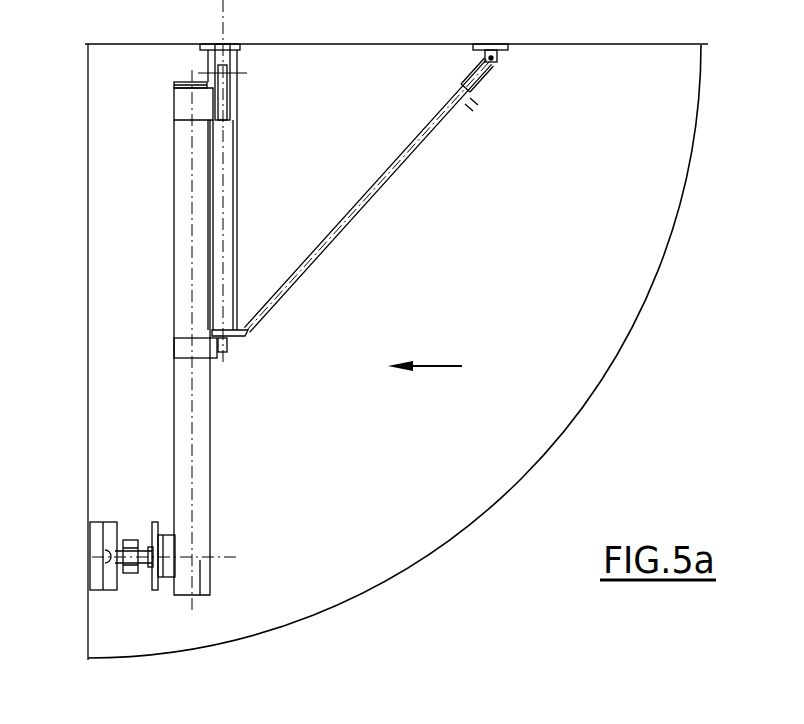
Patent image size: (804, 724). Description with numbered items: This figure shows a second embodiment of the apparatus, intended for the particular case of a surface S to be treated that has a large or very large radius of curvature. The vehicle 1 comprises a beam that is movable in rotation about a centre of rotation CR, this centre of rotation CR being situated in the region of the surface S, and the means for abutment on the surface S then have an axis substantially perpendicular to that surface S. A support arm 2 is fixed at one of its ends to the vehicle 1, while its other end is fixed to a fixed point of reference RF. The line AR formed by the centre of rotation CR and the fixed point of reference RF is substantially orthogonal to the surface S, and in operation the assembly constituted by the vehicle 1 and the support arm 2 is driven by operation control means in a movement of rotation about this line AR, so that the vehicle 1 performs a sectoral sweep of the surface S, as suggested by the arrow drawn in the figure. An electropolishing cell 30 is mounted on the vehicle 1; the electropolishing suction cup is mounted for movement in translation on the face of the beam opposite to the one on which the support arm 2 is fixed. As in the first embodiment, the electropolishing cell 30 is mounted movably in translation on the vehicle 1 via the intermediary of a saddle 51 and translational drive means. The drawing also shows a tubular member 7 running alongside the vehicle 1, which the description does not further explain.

The vehicle 1 is at (203, 475).
The support arm 2 is at (382, 185).
The tube / guide 7 is at (228, 245).
The electropolishing cell 30 is at (92, 537).
The saddle 51 is at (166, 570).
The line AR is at (108, 44).
The centre of rotation CR is at (222, 38).
The fixed point of reference RF is at (492, 43).
The surface to be treated S is at (87, 145).